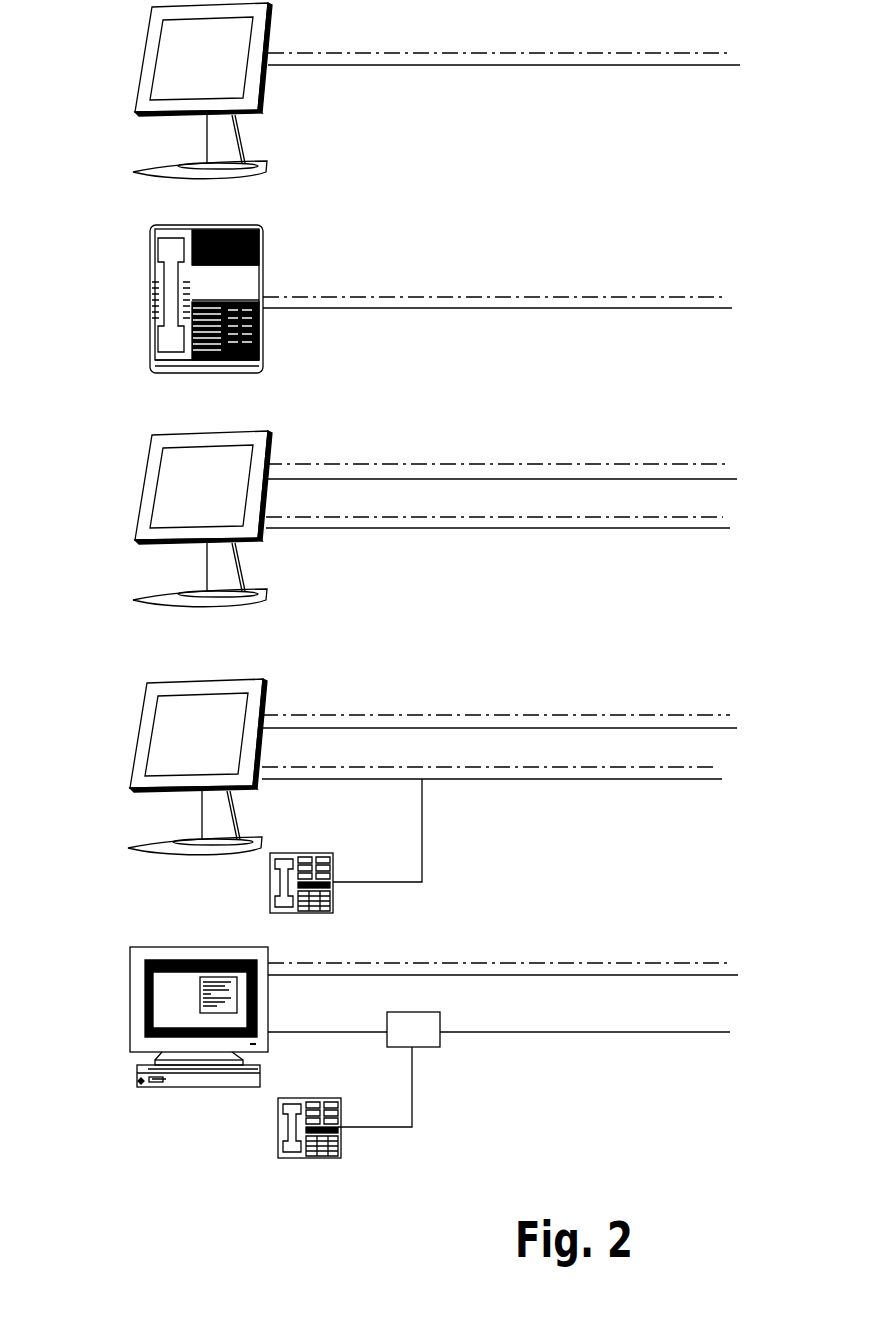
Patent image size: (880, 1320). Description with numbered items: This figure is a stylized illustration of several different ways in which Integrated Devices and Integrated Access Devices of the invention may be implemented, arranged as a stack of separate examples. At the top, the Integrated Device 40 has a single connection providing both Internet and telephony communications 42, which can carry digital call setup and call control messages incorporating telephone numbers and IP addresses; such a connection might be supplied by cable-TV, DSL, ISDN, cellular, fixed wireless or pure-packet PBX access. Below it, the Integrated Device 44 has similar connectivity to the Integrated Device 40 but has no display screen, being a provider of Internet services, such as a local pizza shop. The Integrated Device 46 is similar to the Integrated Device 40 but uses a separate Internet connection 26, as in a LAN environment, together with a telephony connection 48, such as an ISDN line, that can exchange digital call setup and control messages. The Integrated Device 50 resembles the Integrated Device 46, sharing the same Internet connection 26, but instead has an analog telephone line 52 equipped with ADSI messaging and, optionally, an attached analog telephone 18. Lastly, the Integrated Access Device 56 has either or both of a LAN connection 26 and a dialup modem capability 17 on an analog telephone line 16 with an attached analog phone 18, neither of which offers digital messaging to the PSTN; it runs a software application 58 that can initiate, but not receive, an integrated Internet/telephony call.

The analog telephone line 16 is at (523, 1043).
The dialup modem capability 17 is at (433, 1057).
The analog telephone 18 is at (350, 903).
The Internet connection 26 is at (638, 452).
The Integrated Device 40 is at (132, 63).
The Internet and telephony communications connection 42 is at (636, 47).
The Integrated Device 44 is at (140, 302).
The Integrated Device 46 is at (137, 497).
The telephony connection 48 is at (725, 516).
The Integrated Device 50 is at (123, 738).
The analog telephone line 52 is at (717, 767).
The Integrated Access Device 56 is at (122, 1008).
The software application 58 is at (210, 987).